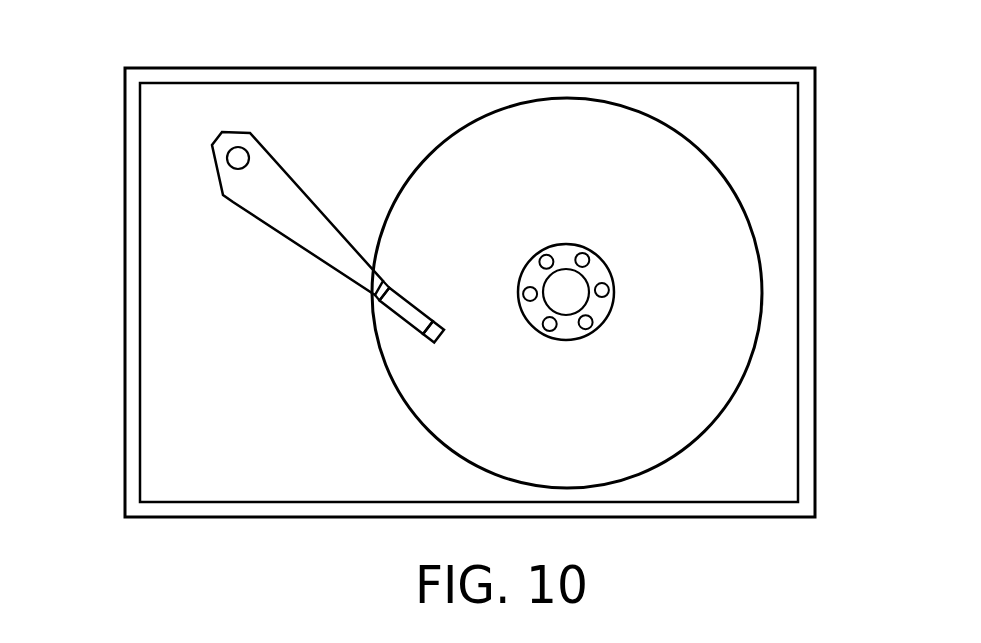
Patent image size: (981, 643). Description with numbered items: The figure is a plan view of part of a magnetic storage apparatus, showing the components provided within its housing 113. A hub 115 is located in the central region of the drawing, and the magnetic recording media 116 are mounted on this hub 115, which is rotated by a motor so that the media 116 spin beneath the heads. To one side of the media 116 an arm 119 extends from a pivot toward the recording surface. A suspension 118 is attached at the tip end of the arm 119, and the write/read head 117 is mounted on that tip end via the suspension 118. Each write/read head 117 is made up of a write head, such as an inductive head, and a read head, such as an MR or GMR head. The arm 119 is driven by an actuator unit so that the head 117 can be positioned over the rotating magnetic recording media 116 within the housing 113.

The housing 113 is at (808, 495).
The hub 115 is at (600, 265).
The magnetic recording media 116 is at (594, 137).
The write/read head 117 is at (440, 340).
The suspension 118 is at (406, 301).
The arm 119 is at (274, 228).